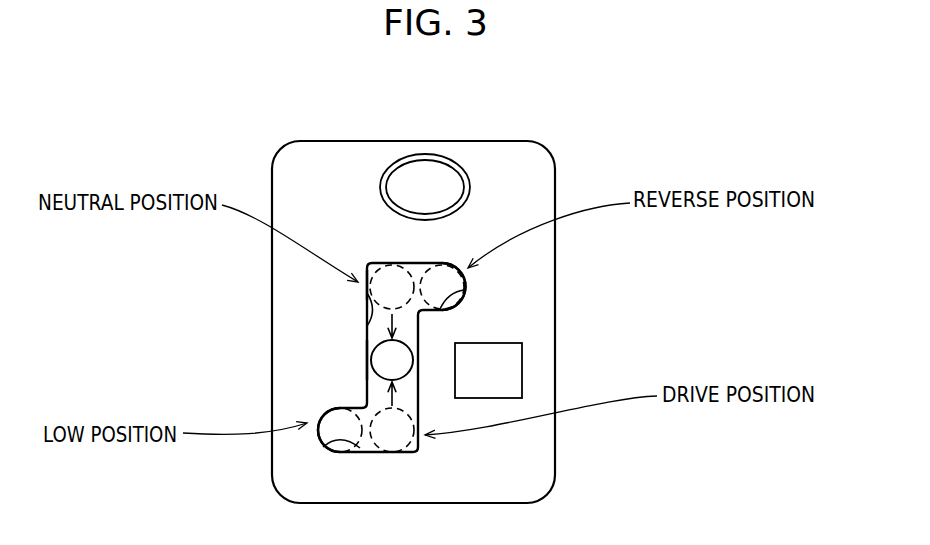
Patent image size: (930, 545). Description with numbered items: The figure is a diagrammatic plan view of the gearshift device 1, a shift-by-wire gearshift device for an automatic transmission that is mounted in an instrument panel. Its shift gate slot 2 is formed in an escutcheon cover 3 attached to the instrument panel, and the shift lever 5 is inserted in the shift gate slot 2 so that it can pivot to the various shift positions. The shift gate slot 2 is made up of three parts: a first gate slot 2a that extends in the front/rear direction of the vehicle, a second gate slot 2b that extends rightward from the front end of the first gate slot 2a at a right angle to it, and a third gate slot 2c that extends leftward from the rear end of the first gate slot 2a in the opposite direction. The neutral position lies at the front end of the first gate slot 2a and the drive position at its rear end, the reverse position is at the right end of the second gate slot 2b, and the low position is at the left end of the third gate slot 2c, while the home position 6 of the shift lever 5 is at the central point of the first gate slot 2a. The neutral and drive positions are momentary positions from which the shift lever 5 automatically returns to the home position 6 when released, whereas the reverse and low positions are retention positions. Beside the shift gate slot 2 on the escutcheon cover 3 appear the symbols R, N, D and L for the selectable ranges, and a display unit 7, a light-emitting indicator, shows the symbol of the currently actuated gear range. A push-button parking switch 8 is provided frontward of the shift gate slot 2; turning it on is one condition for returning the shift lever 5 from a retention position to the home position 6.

The gearshift device 1 is at (288, 135).
The shift gate slot 2 is at (425, 333).
The first gate slot 2a is at (367, 298).
The second gate slot 2b is at (467, 292).
The third gate slot 2c is at (323, 447).
The escutcheon cover 3 is at (525, 180).
The shift lever 5 is at (372, 352).
The home position 6 is at (358, 360).
The display unit 7 is at (522, 358).
The parking switch 8 is at (447, 170).